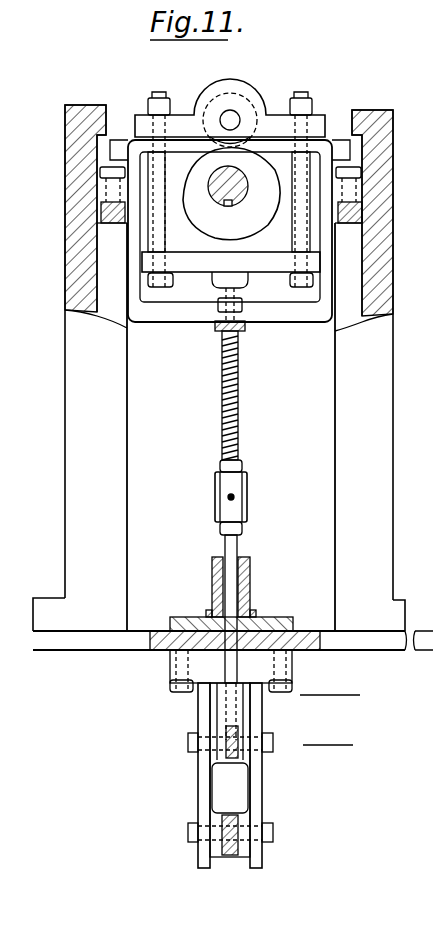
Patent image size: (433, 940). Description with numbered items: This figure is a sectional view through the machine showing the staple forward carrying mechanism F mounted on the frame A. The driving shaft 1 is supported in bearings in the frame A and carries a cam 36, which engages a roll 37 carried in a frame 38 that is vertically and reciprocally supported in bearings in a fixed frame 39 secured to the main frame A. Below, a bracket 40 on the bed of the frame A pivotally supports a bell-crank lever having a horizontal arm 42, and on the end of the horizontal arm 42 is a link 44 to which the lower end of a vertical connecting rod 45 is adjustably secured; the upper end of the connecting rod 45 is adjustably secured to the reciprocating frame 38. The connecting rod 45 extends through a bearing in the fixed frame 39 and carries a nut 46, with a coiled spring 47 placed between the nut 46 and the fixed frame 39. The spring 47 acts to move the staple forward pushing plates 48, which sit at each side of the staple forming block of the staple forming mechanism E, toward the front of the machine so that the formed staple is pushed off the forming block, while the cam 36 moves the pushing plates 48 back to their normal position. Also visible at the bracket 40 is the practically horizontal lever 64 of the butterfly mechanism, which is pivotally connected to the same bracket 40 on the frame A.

The frame A is at (70, 406).
The driving shaft 1 is at (243, 192).
The cam 36 is at (225, 206).
The roll 37 is at (260, 142).
The frame 38 is at (189, 112).
The fixed frame 39 is at (297, 313).
The staple forming mechanism E is at (185, 256).
The staple forward carrying mechanism F is at (215, 498).
The bracket 40 is at (198, 785).
The horizontal arm 42 is at (231, 760).
The link 44 is at (222, 752).
The vertical connecting rod 45 is at (225, 543).
The nut 46 is at (246, 466).
The coiled spring 47 is at (240, 412).
The staple forward pushing plate 48 is at (212, 587).
The lever 64 is at (230, 856).